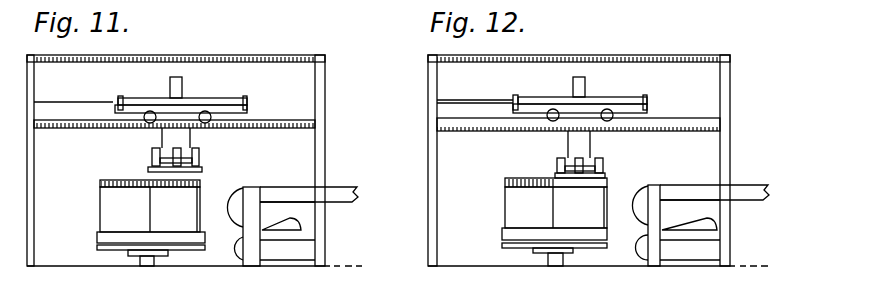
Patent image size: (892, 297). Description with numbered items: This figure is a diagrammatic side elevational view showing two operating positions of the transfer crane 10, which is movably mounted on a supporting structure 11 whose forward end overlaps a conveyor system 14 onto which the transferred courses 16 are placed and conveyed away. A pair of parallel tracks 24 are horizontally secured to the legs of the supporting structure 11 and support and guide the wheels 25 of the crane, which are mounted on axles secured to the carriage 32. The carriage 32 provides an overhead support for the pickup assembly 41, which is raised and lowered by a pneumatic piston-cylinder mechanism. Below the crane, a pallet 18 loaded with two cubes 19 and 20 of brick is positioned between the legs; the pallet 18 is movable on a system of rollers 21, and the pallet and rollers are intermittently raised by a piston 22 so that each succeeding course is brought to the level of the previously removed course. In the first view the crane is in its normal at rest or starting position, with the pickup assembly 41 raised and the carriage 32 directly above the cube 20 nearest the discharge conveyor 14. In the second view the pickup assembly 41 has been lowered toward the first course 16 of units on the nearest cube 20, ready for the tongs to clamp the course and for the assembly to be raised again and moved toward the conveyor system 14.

In FIG. 11, the transfer crane 10 is at (207, 100).
In FIG. 12, the transfer crane 10 is at (613, 99).
In FIG. 11, the supporting structure 11 is at (323, 153).
In FIG. 12, the supporting structure 11 is at (446, 166).
In FIG. 11, the conveyor system 14 is at (347, 194).
In FIG. 12, the conveyor system 14 is at (690, 197).
In FIG. 11, the course 16 is at (201, 181).
In FIG. 12, the course 16 is at (608, 182).
In FIG. 11, the pallet 18 is at (97, 236).
In FIG. 12, the pallet 18 is at (502, 234).
In FIG. 11, the cube 19 is at (98, 202).
In FIG. 12, the cube 19 is at (504, 207).
In FIG. 11, the cube 20 is at (203, 218).
In FIG. 12, the cube 20 is at (610, 217).
In FIG. 11, the rollers 21 is at (181, 255).
In FIG. 12, the rollers 21 is at (502, 252).
In FIG. 11, the piston 22 is at (148, 261).
In FIG. 12, the piston 22 is at (565, 262).
In FIG. 11, the parallel tracks 24 is at (99, 128).
In FIG. 12, the parallel tracks 24 is at (497, 126).
In FIG. 11, the wheels 25 is at (150, 128).
In FIG. 12, the wheels 25 is at (579, 144).
In FIG. 11, the carriage 32 is at (135, 107).
In FIG. 11, the pickup assembly 41 is at (188, 148).
In FIG. 12, the pickup assembly 41 is at (592, 165).